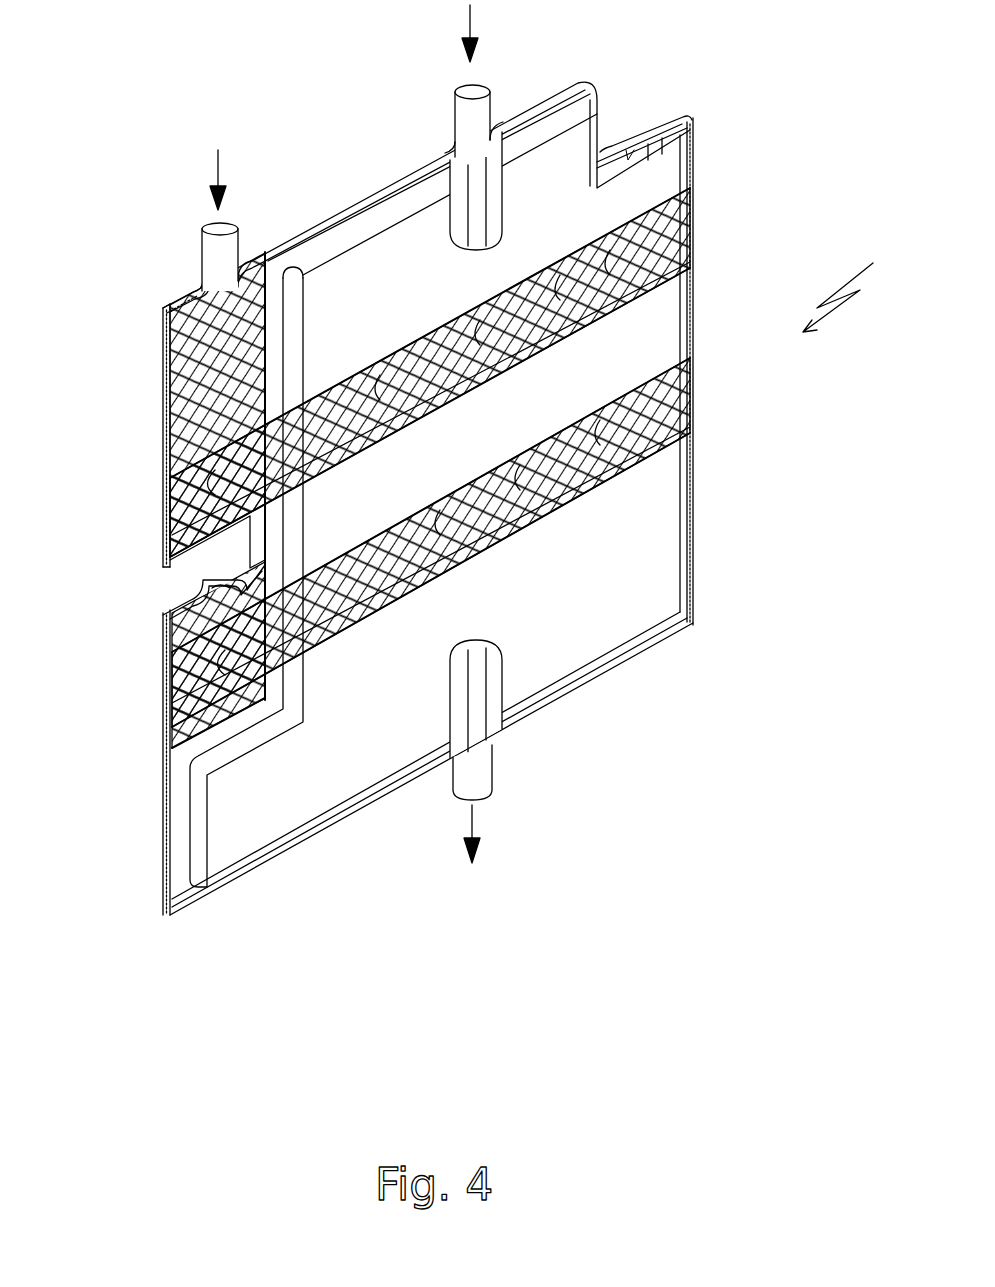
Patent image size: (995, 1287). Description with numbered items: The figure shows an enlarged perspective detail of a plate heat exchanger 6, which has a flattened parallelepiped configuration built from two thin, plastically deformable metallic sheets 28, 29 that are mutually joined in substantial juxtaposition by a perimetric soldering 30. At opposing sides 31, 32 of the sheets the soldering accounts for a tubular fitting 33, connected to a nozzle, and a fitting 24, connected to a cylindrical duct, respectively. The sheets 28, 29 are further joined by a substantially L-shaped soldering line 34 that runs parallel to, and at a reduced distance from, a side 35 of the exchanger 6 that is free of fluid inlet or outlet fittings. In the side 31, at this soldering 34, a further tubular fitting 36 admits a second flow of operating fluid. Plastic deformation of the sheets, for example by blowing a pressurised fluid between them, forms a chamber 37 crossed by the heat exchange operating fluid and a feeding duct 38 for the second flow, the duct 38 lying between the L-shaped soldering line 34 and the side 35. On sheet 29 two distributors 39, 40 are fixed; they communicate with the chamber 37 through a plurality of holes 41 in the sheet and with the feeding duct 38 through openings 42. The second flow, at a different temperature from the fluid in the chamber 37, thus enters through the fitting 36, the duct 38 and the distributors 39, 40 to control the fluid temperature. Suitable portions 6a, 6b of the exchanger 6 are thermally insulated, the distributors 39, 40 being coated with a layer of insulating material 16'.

The plate heat exchanger 6 is at (852, 286).
The portion of heat exchanger 6a is at (540, 540).
The portion of heat exchanger 6b is at (151, 399).
The layer of insulating material 16' is at (478, 457).
The fitting 24 is at (485, 780).
The metallic sheet 28 is at (330, 213).
The metallic sheet 29 is at (588, 82).
The perimetric soldering 30 is at (537, 103).
The side of exchanger 31 is at (292, 236).
The side of exchanger 32 is at (615, 675).
The tubular fitting 33 is at (458, 108).
The L-shaped soldering line 34 is at (287, 300).
The side of exchanger 35 is at (151, 806).
The tubular fitting 36 is at (205, 255).
The chamber 37 is at (630, 148).
The feeding duct 38 is at (190, 578).
The distributor 39 is at (605, 262).
The distributor 40 is at (590, 470).
The holes 41 is at (612, 330).
The openings 42 is at (200, 478).